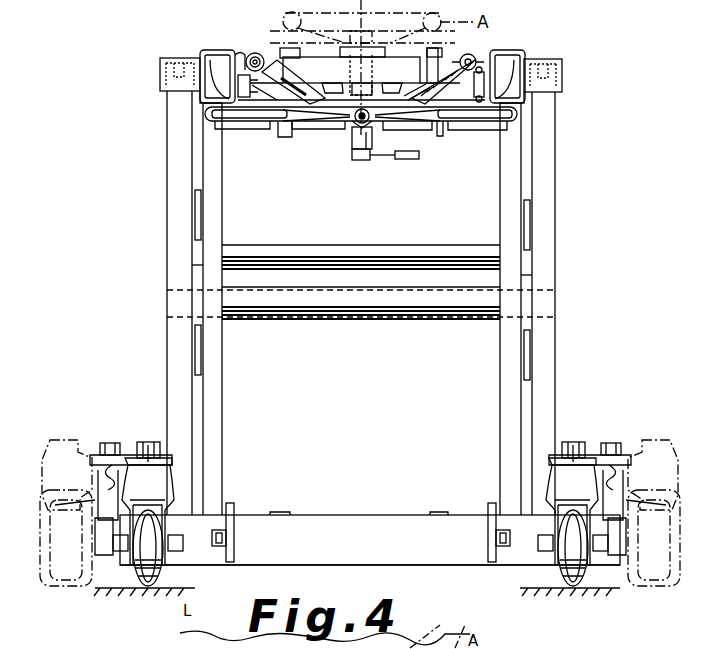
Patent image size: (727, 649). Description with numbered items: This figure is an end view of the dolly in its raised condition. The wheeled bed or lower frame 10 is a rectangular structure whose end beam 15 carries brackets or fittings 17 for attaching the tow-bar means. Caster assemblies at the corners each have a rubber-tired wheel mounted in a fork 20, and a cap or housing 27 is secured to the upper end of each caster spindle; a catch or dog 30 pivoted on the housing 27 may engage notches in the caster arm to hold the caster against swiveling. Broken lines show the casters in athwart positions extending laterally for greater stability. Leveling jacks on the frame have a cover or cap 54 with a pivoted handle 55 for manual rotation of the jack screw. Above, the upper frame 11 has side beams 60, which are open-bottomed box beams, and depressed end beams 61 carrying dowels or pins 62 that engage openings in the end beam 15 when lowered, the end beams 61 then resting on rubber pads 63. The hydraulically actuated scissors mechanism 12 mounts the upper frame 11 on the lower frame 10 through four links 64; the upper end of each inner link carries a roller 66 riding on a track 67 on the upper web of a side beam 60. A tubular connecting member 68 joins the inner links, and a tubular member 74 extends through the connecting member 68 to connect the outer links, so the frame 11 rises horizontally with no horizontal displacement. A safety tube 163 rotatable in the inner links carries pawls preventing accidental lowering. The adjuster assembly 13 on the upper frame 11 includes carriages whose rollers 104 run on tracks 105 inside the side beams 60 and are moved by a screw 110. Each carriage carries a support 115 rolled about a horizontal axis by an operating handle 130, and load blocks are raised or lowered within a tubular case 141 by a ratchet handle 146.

The lower frame 10 is at (513, 568).
The upper frame 11 is at (563, 83).
The scissors mechanism 12 is at (556, 307).
The adjuster assembly 13 is at (480, 54).
The end beam 15 is at (372, 546).
The brackets or fittings 17 is at (235, 540).
The fork 20 is at (175, 497).
The cap or housing 27 is at (577, 455).
The catch or dog 30 is at (149, 455).
The cover or cap 54 is at (615, 457).
The pivoted handle 55 is at (108, 470).
The side beam 60 is at (525, 52).
The end beam 61 is at (262, 121).
The dowels or pins 62 is at (288, 128).
The pads 63 is at (452, 125).
The links 64 is at (180, 277).
The roller 66 is at (242, 58).
The track 67 is at (222, 56).
The connecting member 68 is at (432, 303).
The tubular member 74 is at (302, 292).
The rollers 104 is at (244, 97).
The tracks 105 is at (479, 101).
The screw 110 is at (357, 125).
The support 115 is at (320, 64).
The operating handle 130 is at (464, 57).
The tubular case 141 is at (370, 145).
The ratchet handle 146 is at (405, 159).
The shaft or tube 163 is at (442, 246).